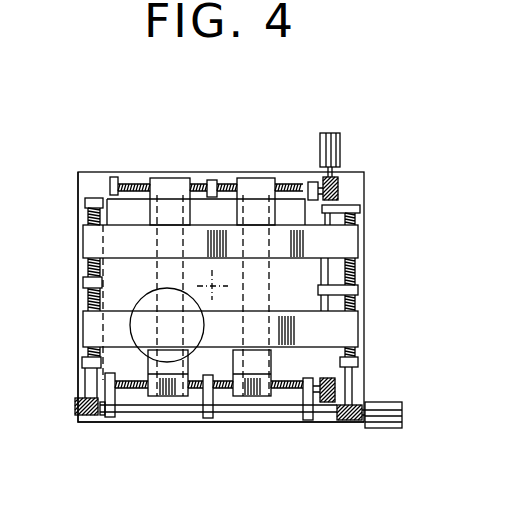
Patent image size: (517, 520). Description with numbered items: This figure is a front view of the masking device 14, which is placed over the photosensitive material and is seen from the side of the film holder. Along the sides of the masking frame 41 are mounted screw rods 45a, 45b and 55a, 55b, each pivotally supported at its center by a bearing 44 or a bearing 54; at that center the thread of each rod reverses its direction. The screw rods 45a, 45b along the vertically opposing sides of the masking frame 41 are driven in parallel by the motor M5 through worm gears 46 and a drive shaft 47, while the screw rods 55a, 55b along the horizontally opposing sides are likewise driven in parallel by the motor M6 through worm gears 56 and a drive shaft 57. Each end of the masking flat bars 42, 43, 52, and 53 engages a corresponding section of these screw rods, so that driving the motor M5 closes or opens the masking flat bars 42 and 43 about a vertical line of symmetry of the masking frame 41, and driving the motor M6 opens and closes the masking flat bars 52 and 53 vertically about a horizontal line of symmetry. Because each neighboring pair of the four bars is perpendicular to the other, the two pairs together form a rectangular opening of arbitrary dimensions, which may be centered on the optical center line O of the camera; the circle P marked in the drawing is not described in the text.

The masking device 14 is at (380, 329).
The masking frame 41 is at (97, 171).
The masking flat bar 42 is at (172, 177).
The masking flat bar 43 is at (258, 177).
The bearing 44 is at (212, 179).
The screw rod 45a is at (290, 182).
The screw rod 45b is at (138, 182).
The worm gear 46 is at (345, 190).
The drive shaft 47 is at (360, 222).
The masking flat bar 52 is at (82, 238).
The masking flat bar 53 is at (83, 327).
The bearing 54 is at (83, 285).
The screw rod 55a is at (88, 270).
The screw rod 55b is at (87, 353).
The worm gear 56 is at (87, 416).
The drive shaft 57 is at (183, 413).
The motor M5 is at (340, 150).
The motor M6 is at (387, 402).
The circle P is at (146, 296).
The optical center line O is at (230, 289).